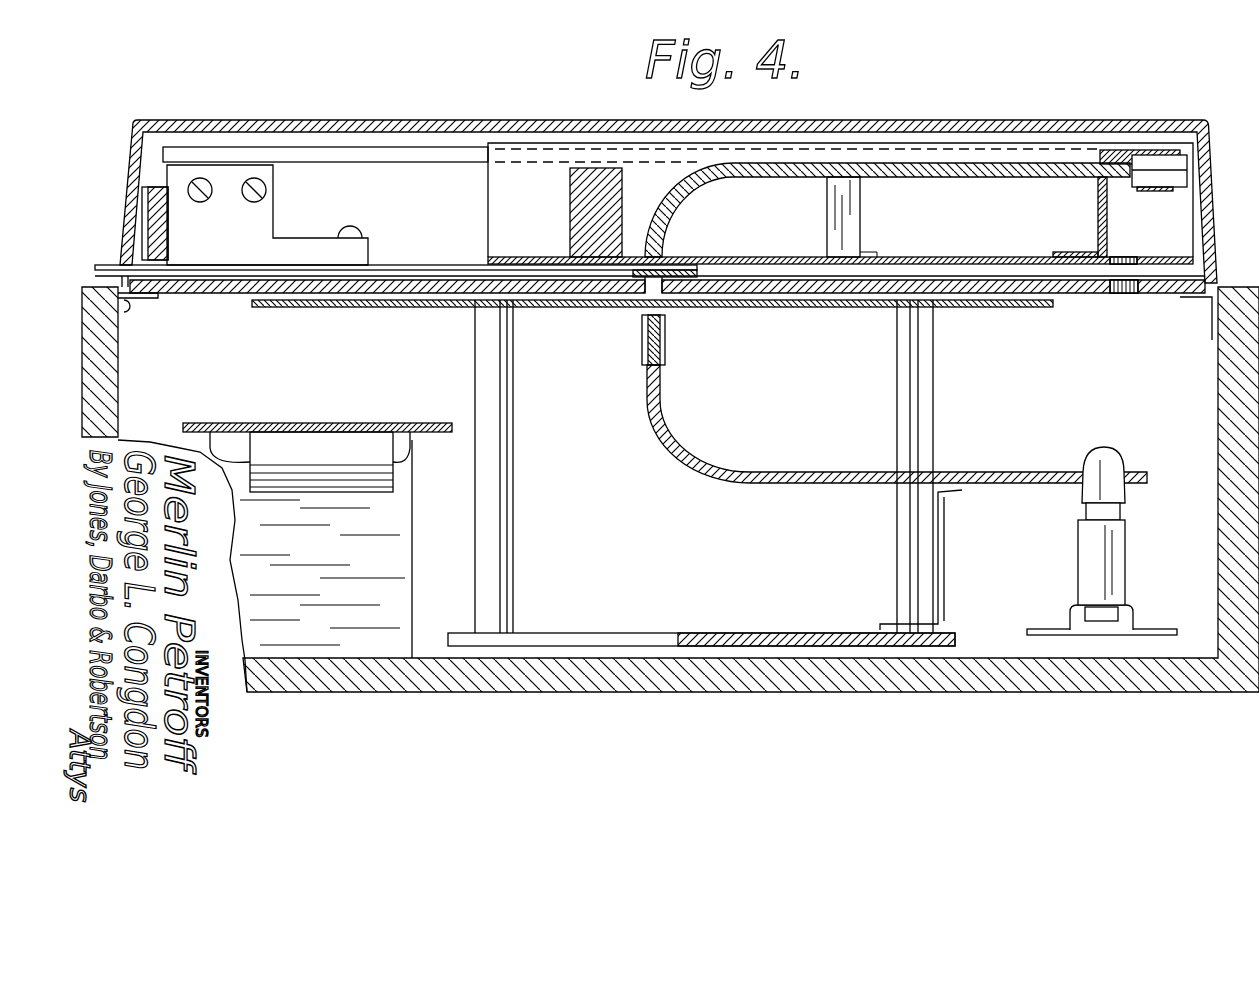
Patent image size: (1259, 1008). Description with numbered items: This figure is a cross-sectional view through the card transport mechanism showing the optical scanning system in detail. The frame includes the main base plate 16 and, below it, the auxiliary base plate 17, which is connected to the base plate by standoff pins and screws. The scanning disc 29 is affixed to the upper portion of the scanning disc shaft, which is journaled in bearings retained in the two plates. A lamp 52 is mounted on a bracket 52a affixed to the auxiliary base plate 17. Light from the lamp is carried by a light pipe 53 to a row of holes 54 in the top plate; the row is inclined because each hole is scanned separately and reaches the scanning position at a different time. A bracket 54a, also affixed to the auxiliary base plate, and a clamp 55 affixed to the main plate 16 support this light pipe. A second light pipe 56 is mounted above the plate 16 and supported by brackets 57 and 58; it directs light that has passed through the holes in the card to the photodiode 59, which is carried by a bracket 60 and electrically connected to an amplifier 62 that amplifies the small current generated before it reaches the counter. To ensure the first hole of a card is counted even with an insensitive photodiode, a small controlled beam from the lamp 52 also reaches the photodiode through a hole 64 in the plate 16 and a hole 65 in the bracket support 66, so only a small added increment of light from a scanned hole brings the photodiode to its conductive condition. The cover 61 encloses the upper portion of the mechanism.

The base plate 16 is at (205, 292).
The auxiliary base plate 17 is at (780, 633).
The scanning disc 29 is at (1038, 308).
The lamp 52 is at (1120, 458).
The bracket 52a is at (1130, 624).
The light pipe 53 is at (780, 472).
The row of holes 54 is at (648, 290).
The bracket 54a is at (940, 560).
The clamp 55 is at (667, 332).
The second light pipe 56 is at (978, 178).
The bracket 57 is at (874, 224).
The bracket 58 is at (1098, 221).
The photodiode 59 is at (1183, 158).
The bracket 60 is at (1159, 187).
The cover 61 is at (1208, 222).
The amplifier 62 is at (326, 417).
The hole 64 is at (1125, 300).
The hole 65 is at (1130, 262).
The bracket support 66 is at (1180, 258).